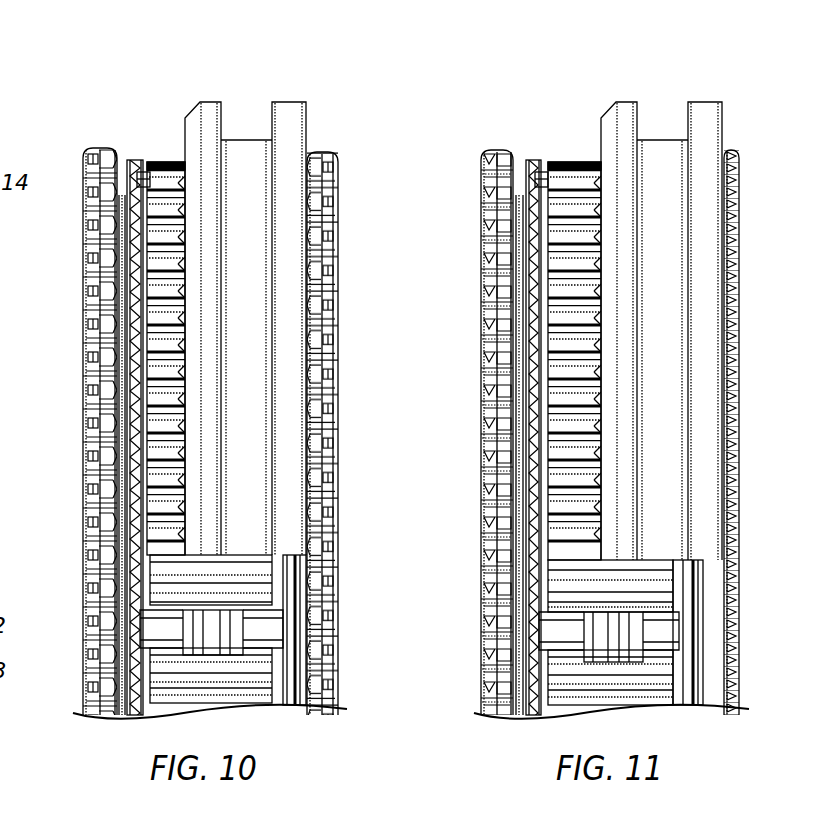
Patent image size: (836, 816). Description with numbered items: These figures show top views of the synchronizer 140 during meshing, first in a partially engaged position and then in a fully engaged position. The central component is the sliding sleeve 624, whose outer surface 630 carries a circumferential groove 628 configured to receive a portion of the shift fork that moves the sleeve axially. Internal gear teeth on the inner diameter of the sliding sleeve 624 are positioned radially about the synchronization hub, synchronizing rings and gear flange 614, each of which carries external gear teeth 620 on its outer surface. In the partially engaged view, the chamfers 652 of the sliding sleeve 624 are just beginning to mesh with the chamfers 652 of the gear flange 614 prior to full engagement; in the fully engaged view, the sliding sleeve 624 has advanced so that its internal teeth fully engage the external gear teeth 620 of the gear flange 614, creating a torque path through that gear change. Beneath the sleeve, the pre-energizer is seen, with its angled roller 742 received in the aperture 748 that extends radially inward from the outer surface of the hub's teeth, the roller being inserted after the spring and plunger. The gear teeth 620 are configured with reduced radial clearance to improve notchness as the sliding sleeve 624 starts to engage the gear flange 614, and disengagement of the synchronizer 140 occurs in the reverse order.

In FIG. 10, the synchronizer 140 is at (70, 689).
In FIG. 11, the synchronizer 140 is at (467, 689).
In FIG. 10, the gear flange 614 is at (346, 205).
In FIG. 11, the gear flange 614 is at (742, 216).
In FIG. 10, the external gear teeth 620 is at (163, 161).
In FIG. 11, the external gear teeth 620 is at (565, 161).
In FIG. 10, the sliding sleeve 624 is at (182, 100).
In FIG. 11, the sliding sleeve 624 is at (598, 100).
In FIG. 10, the circumferential groove 628 is at (243, 137).
In FIG. 11, the circumferential groove 628 is at (654, 138).
In FIG. 10, the outer surface 630 is at (290, 108).
In FIG. 11, the outer surface 630 is at (707, 108).
In FIG. 10, the engagement chamfers 652 is at (126, 193).
In FIG. 11, the engagement chamfers 652 is at (528, 190).
In FIG. 10, the angled roller 742 is at (237, 625).
In FIG. 11, the angled roller 742 is at (634, 635).
In FIG. 10, the aperture 748 is at (235, 642).
In FIG. 11, the aperture 748 is at (630, 647).